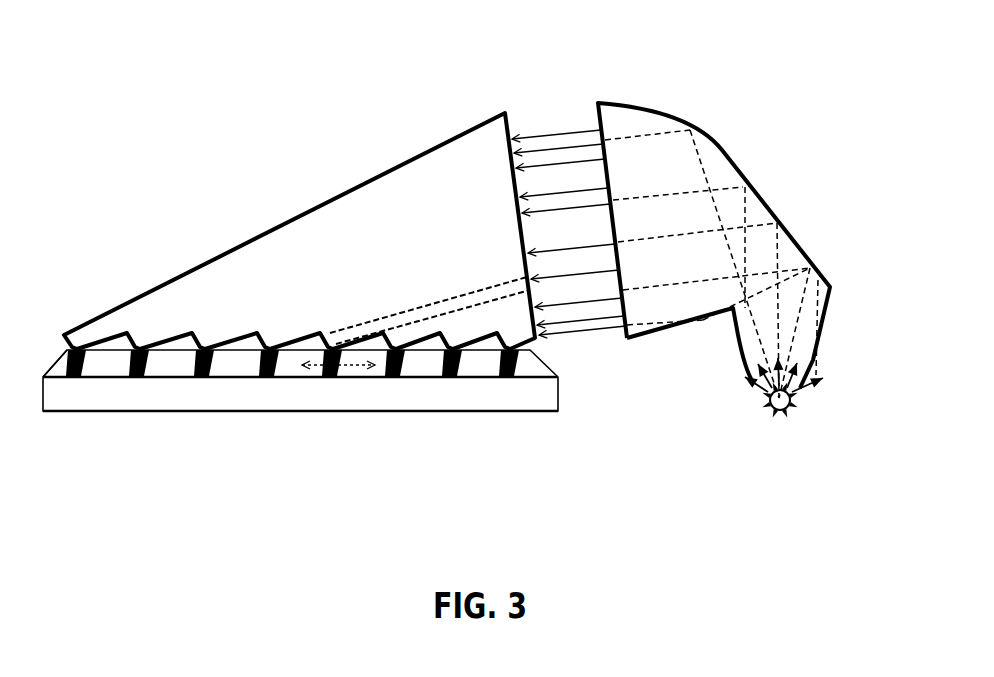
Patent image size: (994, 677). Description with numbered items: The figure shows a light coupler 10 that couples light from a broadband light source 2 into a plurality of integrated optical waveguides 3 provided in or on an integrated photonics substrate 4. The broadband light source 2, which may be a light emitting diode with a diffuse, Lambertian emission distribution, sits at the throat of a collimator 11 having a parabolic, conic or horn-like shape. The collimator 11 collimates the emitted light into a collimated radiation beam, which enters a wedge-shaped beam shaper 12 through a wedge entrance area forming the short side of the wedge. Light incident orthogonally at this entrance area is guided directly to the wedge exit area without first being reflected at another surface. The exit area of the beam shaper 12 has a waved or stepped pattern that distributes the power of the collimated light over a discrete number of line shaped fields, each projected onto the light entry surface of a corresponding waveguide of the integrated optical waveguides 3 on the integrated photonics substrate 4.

The light coupler 10 is at (273, 93).
The beam shaper 12 is at (180, 275).
The integrated optical waveguides 3 is at (338, 370).
The integrated photonics substrate 4 is at (443, 413).
The collimator 11 is at (741, 344).
The broadband light source 2 is at (773, 437).